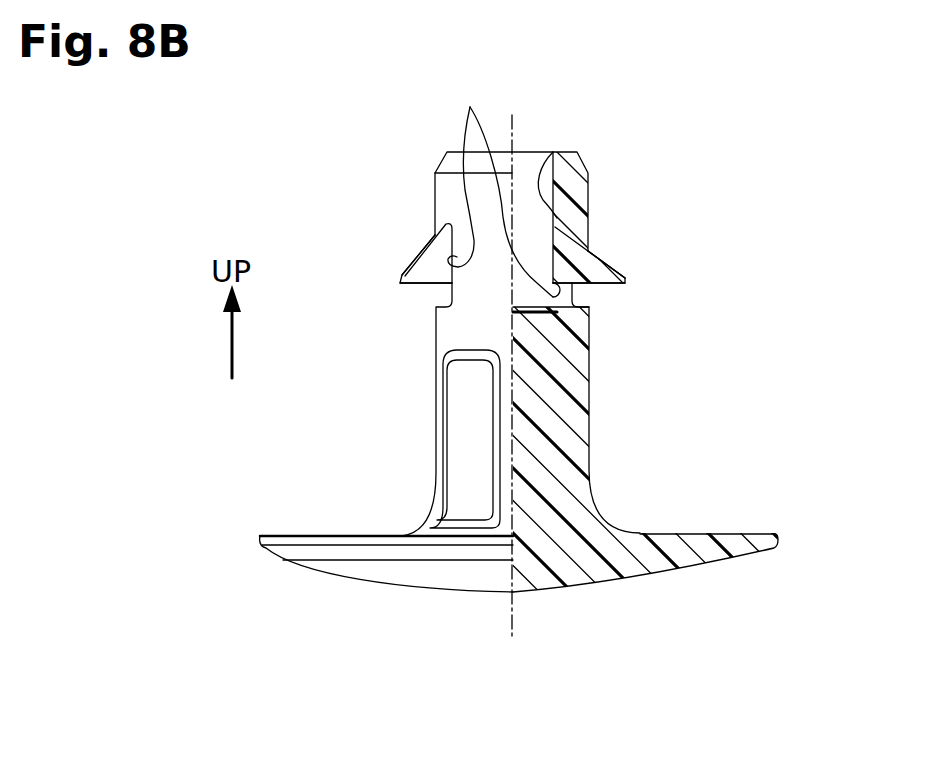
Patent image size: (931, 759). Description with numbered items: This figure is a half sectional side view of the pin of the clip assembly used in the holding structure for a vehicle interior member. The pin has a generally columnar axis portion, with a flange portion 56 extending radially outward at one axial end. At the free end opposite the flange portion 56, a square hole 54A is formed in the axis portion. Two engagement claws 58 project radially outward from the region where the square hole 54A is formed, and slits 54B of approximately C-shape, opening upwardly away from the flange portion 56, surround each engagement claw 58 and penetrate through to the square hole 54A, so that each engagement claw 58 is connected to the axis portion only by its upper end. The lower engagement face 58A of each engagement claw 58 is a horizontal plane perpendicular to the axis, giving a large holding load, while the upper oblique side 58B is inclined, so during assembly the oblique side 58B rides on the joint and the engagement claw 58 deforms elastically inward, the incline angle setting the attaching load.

The square hole 54A is at (553, 152).
The slits 54B is at (500, 100).
The flange portion 56 is at (648, 565).
The engagement claws 58 is at (398, 266).
The engagement face 58A is at (421, 287).
The oblique side 58B is at (428, 256).